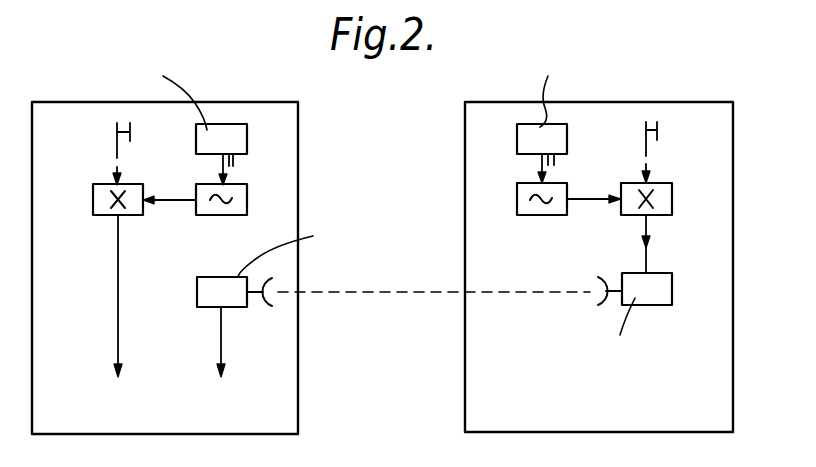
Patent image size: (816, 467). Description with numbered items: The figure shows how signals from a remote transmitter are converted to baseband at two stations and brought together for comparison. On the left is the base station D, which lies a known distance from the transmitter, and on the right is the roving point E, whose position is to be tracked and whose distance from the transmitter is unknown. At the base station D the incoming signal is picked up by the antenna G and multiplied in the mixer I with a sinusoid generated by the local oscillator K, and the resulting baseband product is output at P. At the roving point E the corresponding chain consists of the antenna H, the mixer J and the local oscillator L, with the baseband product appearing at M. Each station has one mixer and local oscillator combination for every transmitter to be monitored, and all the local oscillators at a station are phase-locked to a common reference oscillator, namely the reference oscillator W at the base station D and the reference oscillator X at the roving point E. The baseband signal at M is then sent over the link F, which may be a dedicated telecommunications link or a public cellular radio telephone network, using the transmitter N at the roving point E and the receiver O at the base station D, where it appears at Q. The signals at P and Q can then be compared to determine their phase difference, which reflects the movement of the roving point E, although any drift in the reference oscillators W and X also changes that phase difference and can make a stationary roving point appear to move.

The base station D is at (241, 101).
The roving point E is at (686, 101).
The reference oscillator W is at (171, 107).
The local oscillator K is at (205, 199).
The mixer I is at (109, 280).
The antenna G is at (113, 152).
The receiver O is at (286, 299).
The baseband product output P is at (119, 396).
The relayed baseband output Q is at (224, 397).
The link F is at (434, 279).
The reference oscillator X is at (541, 106).
The local oscillator L is at (559, 199).
The mixer J is at (653, 199).
The antenna H is at (661, 150).
The baseband product output M is at (658, 244).
The transmitter N is at (624, 319).